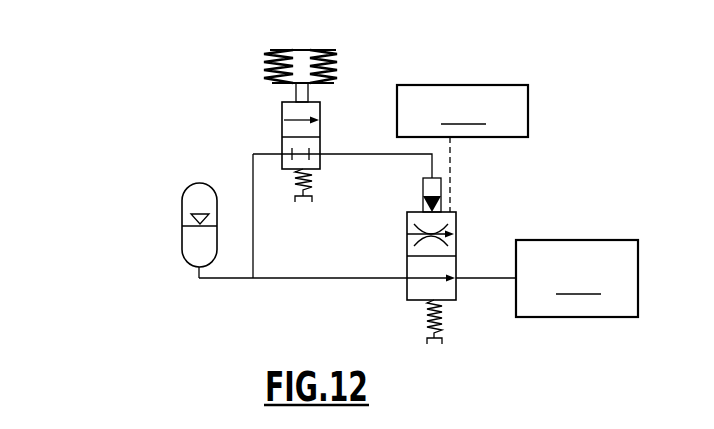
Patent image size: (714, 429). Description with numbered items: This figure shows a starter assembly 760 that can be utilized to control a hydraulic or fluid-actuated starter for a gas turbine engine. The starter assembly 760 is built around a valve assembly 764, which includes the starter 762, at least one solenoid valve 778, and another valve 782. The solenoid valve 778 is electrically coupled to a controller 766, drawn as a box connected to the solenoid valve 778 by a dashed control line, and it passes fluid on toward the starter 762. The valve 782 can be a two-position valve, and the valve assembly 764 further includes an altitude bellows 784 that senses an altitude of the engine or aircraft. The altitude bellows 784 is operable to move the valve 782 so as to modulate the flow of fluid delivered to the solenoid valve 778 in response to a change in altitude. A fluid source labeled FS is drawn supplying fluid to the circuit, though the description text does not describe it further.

The starter assembly 760 is at (139, 66).
The valve assembly 764 is at (221, 73).
The controller 766 is at (462, 148).
The starter 762 is at (577, 278).
The solenoid valve 778 is at (458, 222).
The valve 782 is at (321, 113).
The altitude bellows 784 is at (313, 50).
The fluid source / accumulator FS is at (182, 215).